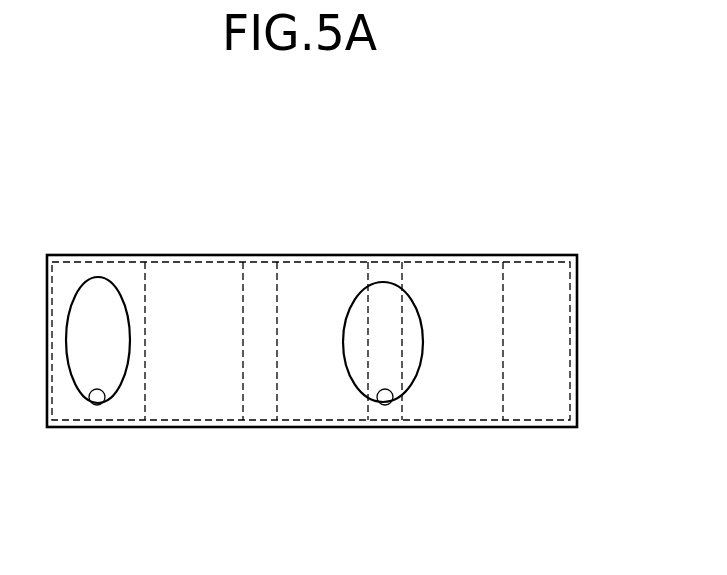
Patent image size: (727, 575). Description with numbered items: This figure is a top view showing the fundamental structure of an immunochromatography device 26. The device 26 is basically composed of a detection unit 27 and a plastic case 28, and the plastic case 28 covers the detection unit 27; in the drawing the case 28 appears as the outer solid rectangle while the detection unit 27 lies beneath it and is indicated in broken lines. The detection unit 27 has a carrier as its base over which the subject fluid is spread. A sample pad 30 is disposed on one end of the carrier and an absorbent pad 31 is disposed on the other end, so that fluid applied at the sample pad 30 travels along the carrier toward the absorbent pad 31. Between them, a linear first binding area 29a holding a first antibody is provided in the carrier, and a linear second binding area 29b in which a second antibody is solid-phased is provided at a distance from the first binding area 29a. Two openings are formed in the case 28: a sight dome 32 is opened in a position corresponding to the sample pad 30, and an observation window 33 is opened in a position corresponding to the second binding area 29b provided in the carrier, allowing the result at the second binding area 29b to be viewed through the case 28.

The immunochromatography device 26 is at (348, 162).
The detection unit 27 is at (581, 322).
The plastic case 28 is at (578, 281).
The first binding area 29a is at (277, 312).
The second binding area 29b is at (402, 312).
The sample pad 30 is at (145, 312).
The absorbent pad 31 is at (503, 306).
The sight dome 32 is at (98, 405).
The observation window 33 is at (389, 405).